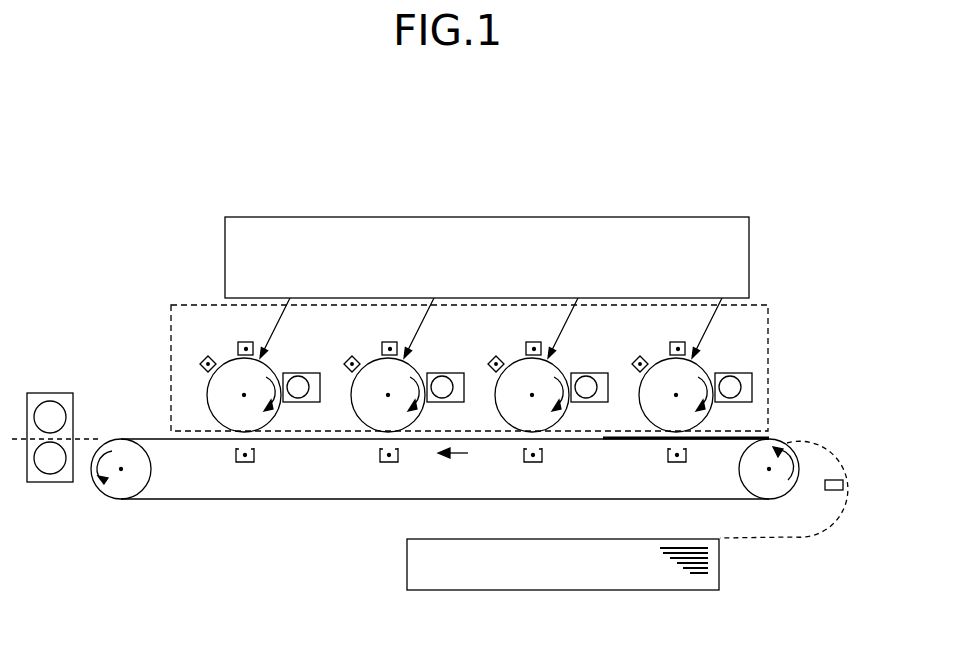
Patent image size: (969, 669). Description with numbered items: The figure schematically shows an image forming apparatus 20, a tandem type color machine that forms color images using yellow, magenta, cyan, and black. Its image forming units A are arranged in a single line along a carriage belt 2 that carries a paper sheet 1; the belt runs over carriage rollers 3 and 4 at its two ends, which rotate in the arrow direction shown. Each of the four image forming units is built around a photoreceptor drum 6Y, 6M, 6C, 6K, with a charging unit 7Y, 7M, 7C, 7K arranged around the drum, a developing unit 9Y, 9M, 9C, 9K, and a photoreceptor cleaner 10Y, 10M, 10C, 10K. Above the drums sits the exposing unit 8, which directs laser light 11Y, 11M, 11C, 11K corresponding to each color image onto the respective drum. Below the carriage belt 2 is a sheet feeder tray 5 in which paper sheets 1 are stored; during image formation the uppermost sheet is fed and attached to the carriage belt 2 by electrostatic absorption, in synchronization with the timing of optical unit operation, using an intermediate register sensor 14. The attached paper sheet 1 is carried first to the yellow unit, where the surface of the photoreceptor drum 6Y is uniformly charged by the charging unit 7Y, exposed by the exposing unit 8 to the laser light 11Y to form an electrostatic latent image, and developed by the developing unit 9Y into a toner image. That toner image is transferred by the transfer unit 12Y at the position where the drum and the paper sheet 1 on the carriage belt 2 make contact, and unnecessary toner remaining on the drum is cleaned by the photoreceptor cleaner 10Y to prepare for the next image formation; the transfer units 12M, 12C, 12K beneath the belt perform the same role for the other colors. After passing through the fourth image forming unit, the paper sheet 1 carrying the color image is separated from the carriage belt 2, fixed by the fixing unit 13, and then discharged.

The paper sheet 1 is at (812, 455).
The carriage belt 2 is at (303, 500).
The carriage roller 3 is at (765, 489).
The carriage roller 4 is at (118, 490).
The sheet feeder tray 5 is at (720, 560).
The photoreceptor drum 6K is at (272, 370).
The photoreceptor drum 6C is at (416, 370).
The photoreceptor drum 6M is at (560, 370).
The photoreceptor drum 6Y is at (704, 370).
The charging unit 7K is at (246, 342).
The charging unit 7C is at (390, 342).
The charging unit 7M is at (534, 342).
The charging unit 7Y is at (678, 342).
The exposing unit 8 is at (750, 235).
The developing unit 9K is at (300, 402).
The developing unit 9C is at (444, 402).
The developing unit 9M is at (588, 402).
The developing unit 9Y is at (732, 402).
The photoreceptor cleaner 10K is at (209, 356).
The photoreceptor cleaner 10C is at (353, 356).
The photoreceptor cleaner 10M is at (497, 356).
The photoreceptor cleaner 10Y is at (641, 356).
The laser light 11K is at (275, 330).
The laser light 11C is at (419, 330).
The laser light 11M is at (563, 330).
The laser light 11Y is at (707, 330).
The transfer unit 12K is at (245, 462).
The transfer unit 12C is at (389, 462).
The transfer unit 12M is at (533, 462).
The transfer unit 12Y is at (677, 462).
The fixing unit 13 is at (50, 483).
The intermediate register sensor 14 is at (834, 490).
The image forming apparatus 20 is at (742, 177).
The image forming units A is at (171, 330).